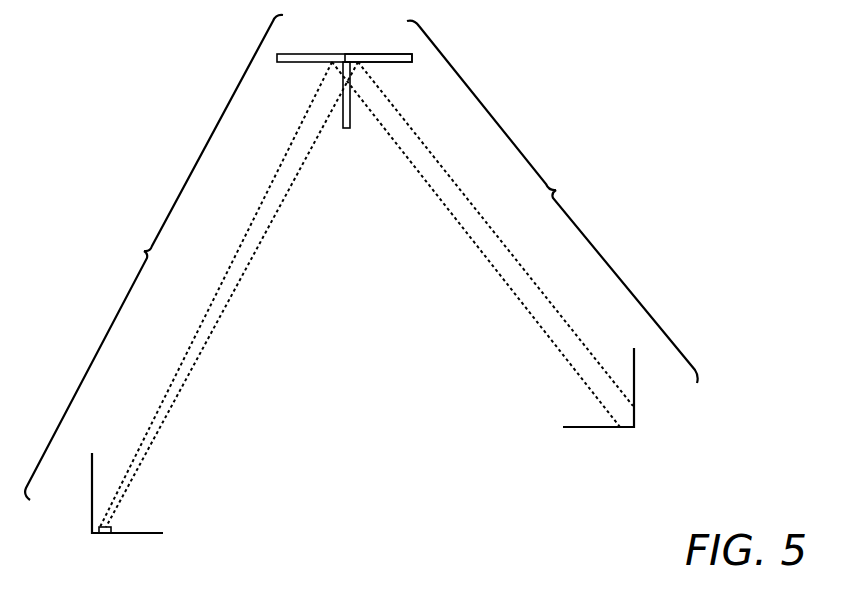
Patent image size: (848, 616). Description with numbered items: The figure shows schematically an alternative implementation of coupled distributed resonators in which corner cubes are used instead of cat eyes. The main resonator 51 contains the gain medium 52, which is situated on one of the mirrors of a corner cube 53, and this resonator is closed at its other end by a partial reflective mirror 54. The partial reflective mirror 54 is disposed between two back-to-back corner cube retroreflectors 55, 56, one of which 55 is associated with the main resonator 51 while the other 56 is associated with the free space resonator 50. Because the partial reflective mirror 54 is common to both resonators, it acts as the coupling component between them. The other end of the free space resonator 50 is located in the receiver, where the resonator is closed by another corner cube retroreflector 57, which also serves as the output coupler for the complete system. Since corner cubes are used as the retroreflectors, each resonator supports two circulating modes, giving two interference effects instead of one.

The free space resonator 50 is at (552, 202).
The main resonator 51 is at (154, 257).
The gain medium 52 is at (112, 528).
The corner cube 53 is at (145, 535).
The partial reflective mirror 54 is at (343, 130).
The corner cube retroreflector 55 is at (283, 63).
The corner cube retroreflector 56 is at (411, 63).
The corner cube retroreflector 57 is at (635, 388).